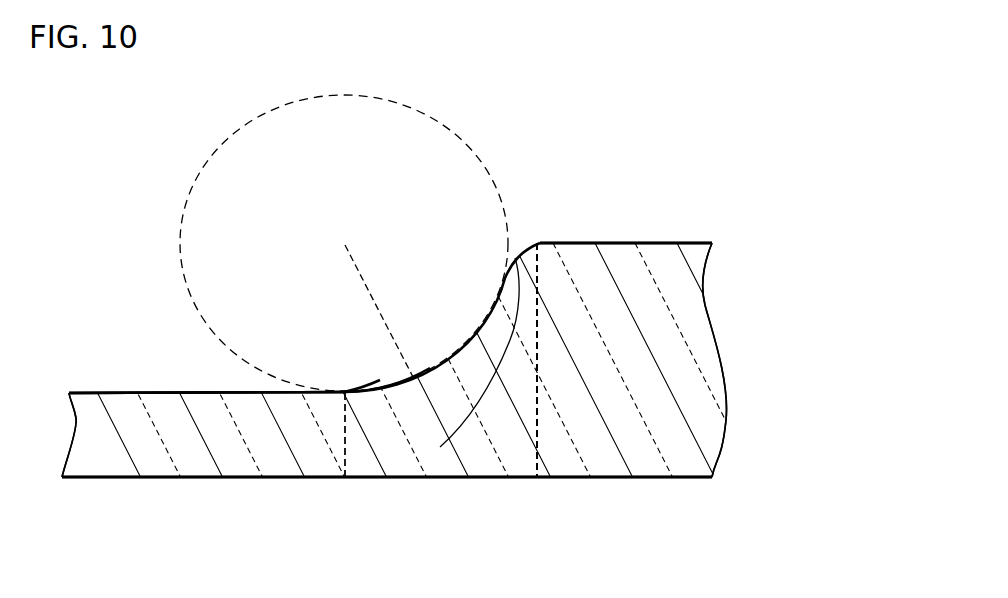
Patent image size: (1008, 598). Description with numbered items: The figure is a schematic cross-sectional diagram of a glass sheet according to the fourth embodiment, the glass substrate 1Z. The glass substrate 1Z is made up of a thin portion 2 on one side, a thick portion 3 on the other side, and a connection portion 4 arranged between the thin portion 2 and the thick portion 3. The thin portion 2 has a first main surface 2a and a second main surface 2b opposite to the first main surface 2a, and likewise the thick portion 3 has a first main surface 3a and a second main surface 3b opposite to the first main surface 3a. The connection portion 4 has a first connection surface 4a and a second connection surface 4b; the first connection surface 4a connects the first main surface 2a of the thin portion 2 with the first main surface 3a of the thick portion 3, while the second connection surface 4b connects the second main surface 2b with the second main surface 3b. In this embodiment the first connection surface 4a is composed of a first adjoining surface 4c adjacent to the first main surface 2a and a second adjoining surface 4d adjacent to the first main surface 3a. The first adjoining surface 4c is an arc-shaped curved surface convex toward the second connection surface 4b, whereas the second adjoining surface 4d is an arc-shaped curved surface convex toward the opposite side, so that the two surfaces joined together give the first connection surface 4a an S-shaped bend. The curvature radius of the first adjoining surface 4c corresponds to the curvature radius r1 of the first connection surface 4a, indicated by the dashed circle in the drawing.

The glass substrate 1Z is at (698, 197).
The thin portion 2 is at (198, 455).
The first main surface 2a is at (130, 393).
The second main surface 2b is at (150, 477).
The thick portion 3 is at (680, 447).
The first main surface 3a is at (595, 243).
The second main surface 3b is at (618, 477).
The connection portion 4 is at (514, 450).
The first connection surface 4a is at (435, 524).
The second connection surface 4b is at (470, 477).
The first adjoining surface 4c is at (366, 392).
The second adjoining surface 4d is at (440, 447).
The curvature radius r1 is at (413, 377).